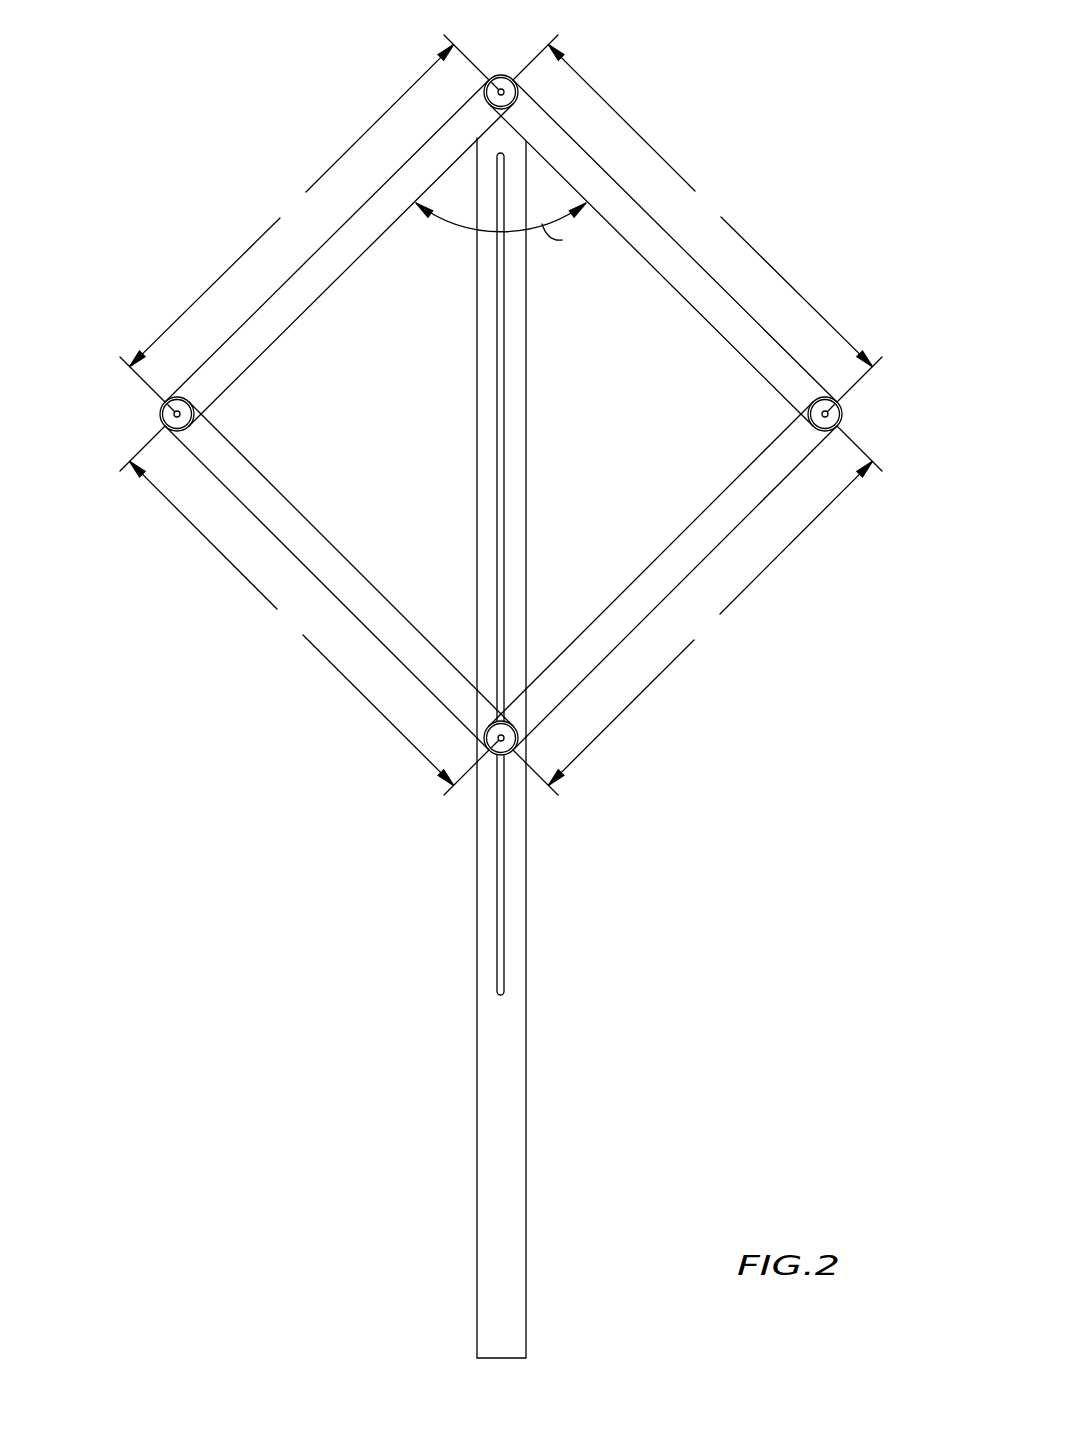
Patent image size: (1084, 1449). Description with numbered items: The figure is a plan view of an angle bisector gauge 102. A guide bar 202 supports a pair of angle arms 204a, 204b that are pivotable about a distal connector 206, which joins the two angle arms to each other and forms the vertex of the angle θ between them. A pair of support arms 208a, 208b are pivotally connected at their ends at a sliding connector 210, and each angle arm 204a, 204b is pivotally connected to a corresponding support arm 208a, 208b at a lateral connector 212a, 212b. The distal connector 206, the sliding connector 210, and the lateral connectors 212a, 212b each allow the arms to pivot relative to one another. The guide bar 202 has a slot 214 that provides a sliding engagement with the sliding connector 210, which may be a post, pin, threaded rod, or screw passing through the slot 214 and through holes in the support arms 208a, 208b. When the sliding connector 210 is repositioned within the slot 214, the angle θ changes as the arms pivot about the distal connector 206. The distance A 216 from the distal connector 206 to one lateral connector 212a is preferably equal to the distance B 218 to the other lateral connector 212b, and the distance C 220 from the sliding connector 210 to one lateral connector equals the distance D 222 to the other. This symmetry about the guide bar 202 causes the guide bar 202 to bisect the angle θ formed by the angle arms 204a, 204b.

The angle bisector gauge 102 is at (741, 91).
The guide bar 202 is at (502, 1088).
The angle arm 204a is at (342, 260).
The angle arm 204b is at (659, 260).
The distal connector 206 is at (500, 75).
The support arm 208a is at (302, 542).
The support arm 208b is at (717, 523).
The sliding connector 210 is at (493, 750).
The lateral connector 212a is at (160, 414).
The lateral connector 212b is at (842, 414).
The slot 214 is at (498, 893).
The distance A 216 is at (290, 203).
The distance B 218 is at (717, 195).
The distance C 220 is at (282, 632).
The distance D 222 is at (718, 633).